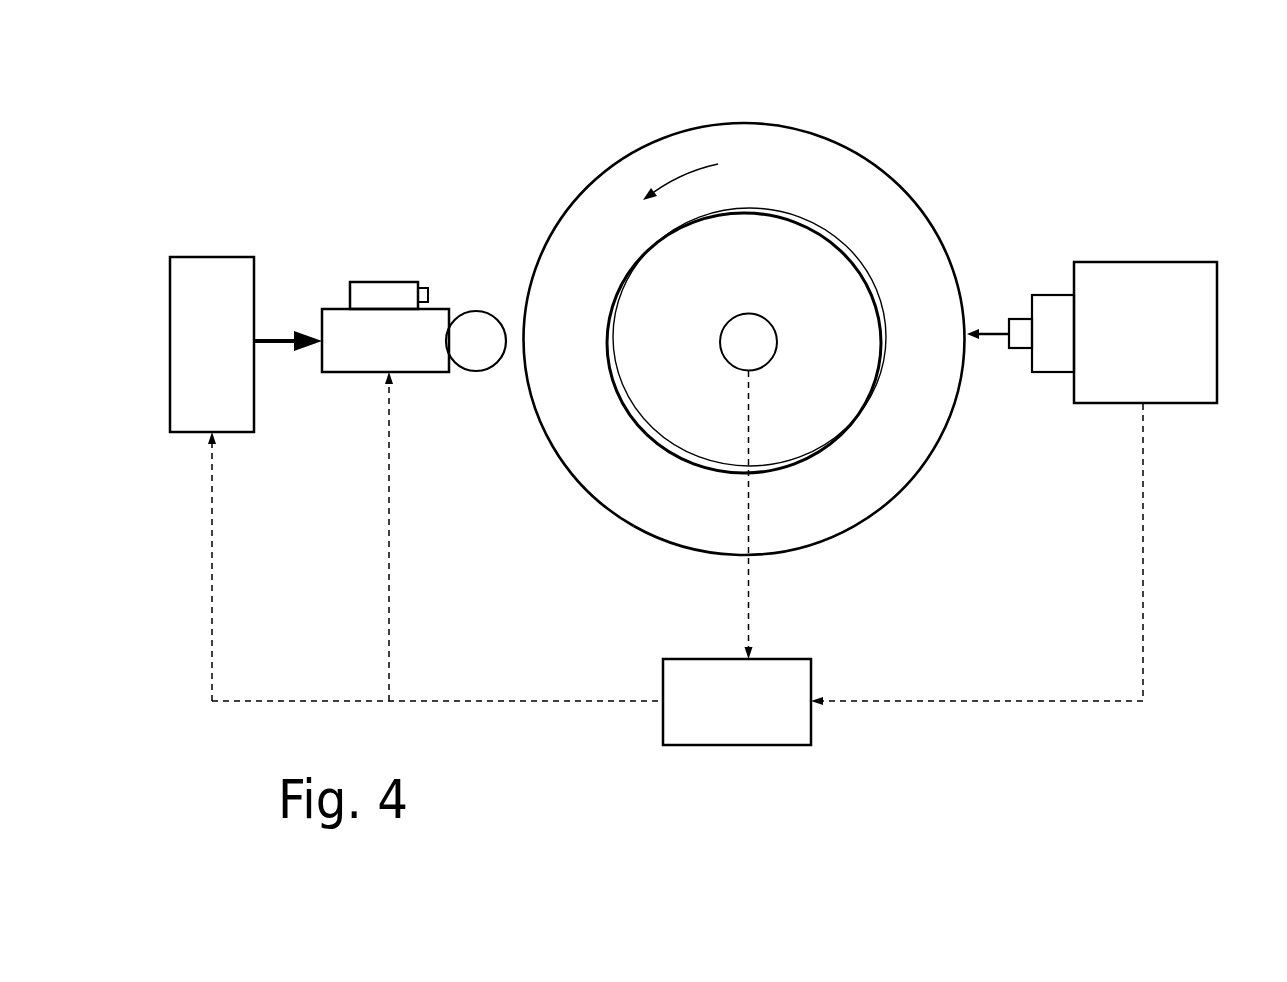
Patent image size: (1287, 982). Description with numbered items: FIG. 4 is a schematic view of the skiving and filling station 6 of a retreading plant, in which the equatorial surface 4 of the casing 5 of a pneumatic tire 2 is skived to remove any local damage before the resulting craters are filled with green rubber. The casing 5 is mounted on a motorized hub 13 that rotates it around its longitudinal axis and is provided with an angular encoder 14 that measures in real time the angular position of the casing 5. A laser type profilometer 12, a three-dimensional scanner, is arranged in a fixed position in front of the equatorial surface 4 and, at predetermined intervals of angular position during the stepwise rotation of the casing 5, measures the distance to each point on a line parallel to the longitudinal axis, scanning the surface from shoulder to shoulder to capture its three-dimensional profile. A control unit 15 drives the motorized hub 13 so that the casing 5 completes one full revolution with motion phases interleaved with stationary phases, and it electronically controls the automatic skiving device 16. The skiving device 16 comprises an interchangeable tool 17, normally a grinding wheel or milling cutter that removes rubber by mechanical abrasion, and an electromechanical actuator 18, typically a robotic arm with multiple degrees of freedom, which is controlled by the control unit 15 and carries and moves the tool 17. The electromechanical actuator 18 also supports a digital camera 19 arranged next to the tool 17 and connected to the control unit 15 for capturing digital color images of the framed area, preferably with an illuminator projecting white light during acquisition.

The pneumatic tire 2 is at (556, 498).
The equatorial surface 4 is at (733, 122).
The casing 5 is at (710, 537).
The skiving and filling station 6 is at (1100, 113).
The laser type profilometer 12 is at (1092, 332).
The motorized hub 13 is at (810, 288).
The angular encoder 14 is at (748, 342).
The control unit 15 is at (675, 558).
The automatic skiving device 16 is at (345, 162).
The tool 17 is at (414, 340).
The electromechanical actuator 18 is at (246, 344).
The digital camera 19 is at (389, 295).